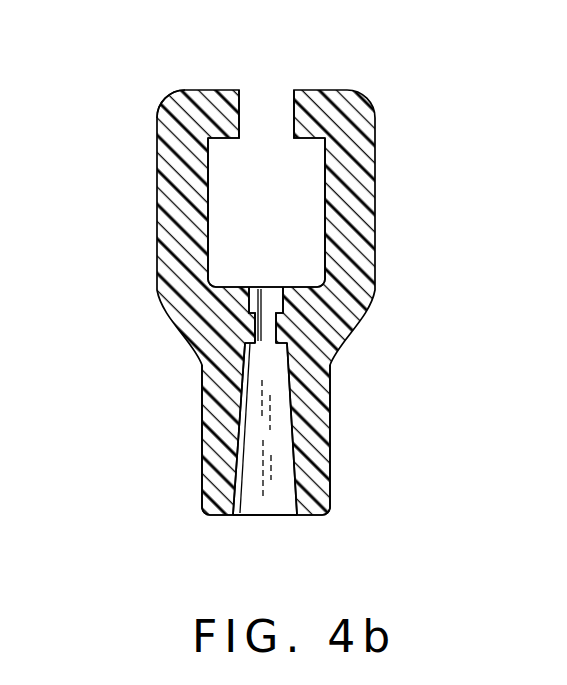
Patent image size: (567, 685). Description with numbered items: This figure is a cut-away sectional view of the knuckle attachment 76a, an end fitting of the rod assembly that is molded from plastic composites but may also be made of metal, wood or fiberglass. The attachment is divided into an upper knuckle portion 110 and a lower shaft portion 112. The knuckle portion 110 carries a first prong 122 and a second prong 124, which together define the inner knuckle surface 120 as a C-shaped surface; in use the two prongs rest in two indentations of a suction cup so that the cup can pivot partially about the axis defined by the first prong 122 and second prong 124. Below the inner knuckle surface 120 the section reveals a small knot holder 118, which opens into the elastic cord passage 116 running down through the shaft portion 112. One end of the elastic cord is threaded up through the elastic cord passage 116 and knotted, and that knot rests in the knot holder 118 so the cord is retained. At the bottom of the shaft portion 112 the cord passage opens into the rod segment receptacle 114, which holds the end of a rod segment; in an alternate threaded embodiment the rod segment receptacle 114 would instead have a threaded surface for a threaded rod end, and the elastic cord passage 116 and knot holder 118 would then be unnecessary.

The knuckle attachment 76a is at (150, 100).
The knuckle portion 110 is at (378, 185).
The shaft portion 112 is at (331, 416).
The rod segment receptacle 114 is at (273, 508).
The elastic cord passage 116 is at (277, 332).
The knot holder 118 is at (279, 305).
The inner knuckle surface 120 is at (209, 177).
The first prong 122 is at (249, 92).
The second prong 124 is at (291, 98).